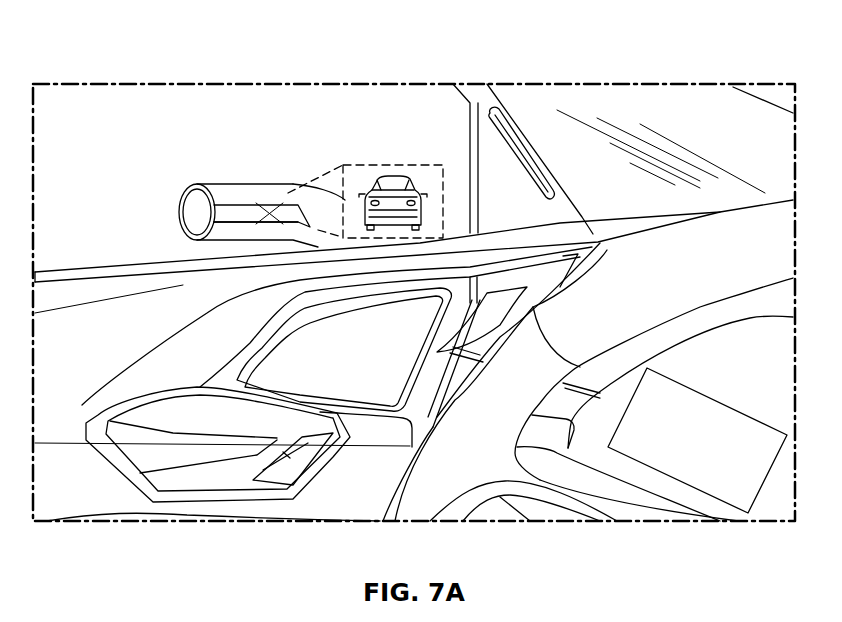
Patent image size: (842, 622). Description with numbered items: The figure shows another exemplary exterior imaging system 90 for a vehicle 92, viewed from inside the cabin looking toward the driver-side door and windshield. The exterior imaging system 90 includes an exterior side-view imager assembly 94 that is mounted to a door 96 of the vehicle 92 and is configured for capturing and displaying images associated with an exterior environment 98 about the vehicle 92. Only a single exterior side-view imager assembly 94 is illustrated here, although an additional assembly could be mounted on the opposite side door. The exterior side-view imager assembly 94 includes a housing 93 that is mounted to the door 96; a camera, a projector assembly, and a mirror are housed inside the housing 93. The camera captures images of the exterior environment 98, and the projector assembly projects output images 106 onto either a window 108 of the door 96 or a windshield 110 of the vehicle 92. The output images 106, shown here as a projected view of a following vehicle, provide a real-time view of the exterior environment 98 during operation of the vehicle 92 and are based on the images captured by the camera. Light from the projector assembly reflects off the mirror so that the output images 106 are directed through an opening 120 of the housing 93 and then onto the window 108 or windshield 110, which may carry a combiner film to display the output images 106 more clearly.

The exterior imaging system 90 is at (273, 128).
The vehicle 92 is at (77, 256).
The housing 93 is at (226, 203).
The exterior side-view imager assembly 94 is at (246, 192).
The door 96 is at (143, 300).
The exterior environment 98 is at (97, 203).
The output images 106 is at (397, 168).
The window 108 is at (388, 137).
The windshield 110 is at (660, 113).
The opening 120 is at (227, 227).